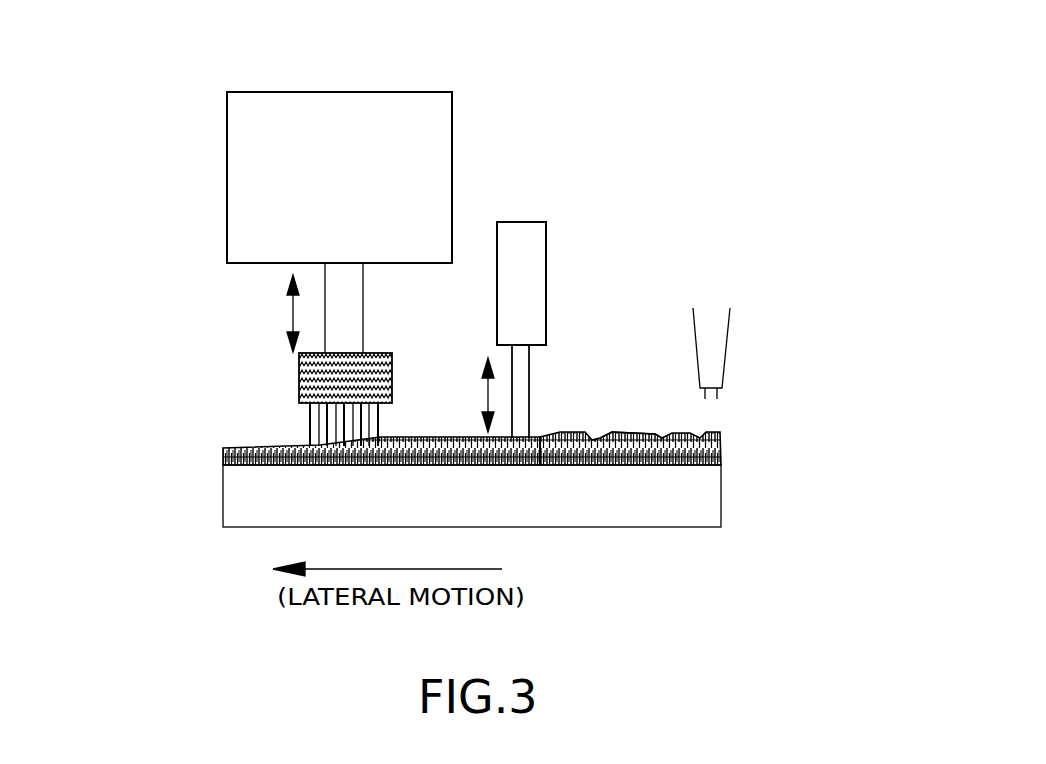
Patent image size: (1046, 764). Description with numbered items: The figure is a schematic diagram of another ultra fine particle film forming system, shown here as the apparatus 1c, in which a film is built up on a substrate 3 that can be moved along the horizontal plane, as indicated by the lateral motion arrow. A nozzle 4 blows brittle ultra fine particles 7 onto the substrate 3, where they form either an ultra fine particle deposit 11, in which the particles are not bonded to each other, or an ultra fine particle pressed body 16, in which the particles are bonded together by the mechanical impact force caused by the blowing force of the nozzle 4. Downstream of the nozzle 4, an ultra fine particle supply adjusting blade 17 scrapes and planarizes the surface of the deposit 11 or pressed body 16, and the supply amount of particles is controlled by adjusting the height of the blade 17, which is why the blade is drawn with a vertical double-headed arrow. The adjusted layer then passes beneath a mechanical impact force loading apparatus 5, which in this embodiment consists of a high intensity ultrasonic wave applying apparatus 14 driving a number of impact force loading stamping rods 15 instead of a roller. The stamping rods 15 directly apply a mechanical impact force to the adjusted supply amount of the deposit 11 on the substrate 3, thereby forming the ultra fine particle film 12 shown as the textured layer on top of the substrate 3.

The substrate 3 is at (552, 510).
The ultra fine particle film 12 is at (225, 445).
The ultra fine particle deposit 11 is at (590, 440).
The ultra fine particle pressed body 16 is at (631, 388).
The high intensity ultrasonic wave applying apparatus 14 is at (305, 108).
The mechanical impact force loading apparatus 5 is at (215, 250).
The impact force loading stamping rods 15 is at (294, 403).
The ultra fine particle supply adjusting blade 1c is at (493, 205).
The ultra fine particle supply adjusting blade 17 is at (529, 375).
The nozzle 4 is at (730, 339).
The brittle ultra fine particles 7 is at (722, 376).